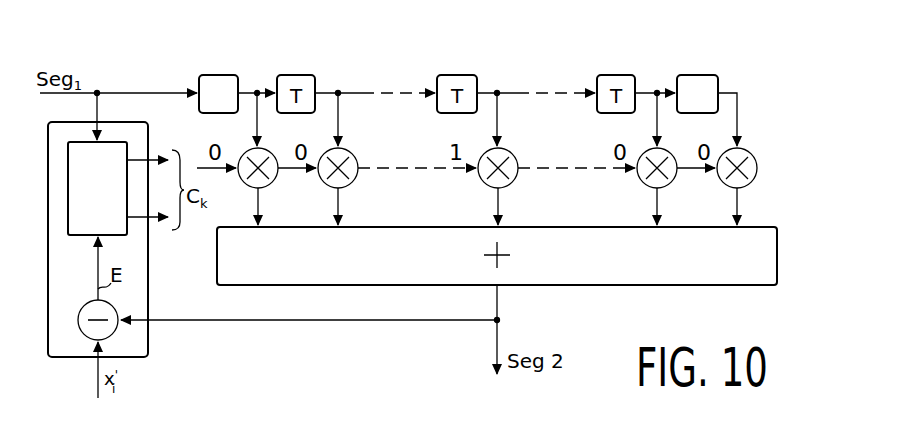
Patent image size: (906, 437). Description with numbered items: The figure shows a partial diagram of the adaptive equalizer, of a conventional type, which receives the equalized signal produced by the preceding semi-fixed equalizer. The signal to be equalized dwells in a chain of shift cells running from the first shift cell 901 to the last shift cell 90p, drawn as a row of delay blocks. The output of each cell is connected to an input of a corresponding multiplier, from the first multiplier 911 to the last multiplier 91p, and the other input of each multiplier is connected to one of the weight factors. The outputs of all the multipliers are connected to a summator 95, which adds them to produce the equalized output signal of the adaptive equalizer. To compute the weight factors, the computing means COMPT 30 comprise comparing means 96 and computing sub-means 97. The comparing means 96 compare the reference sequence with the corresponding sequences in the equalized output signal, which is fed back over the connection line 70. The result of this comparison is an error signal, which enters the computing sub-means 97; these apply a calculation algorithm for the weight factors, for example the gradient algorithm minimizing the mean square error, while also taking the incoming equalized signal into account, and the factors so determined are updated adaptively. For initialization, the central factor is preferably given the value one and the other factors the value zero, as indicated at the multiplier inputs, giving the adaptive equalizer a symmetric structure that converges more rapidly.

The computing means COMPT 30 is at (149, 331).
The connection line 70 is at (330, 322).
The summator 95 is at (447, 226).
The comparing means 96 is at (78, 318).
The computing sub-means 97 is at (85, 238).
The shift cell 901 is at (216, 74).
The shift cell 90p is at (705, 73).
The multiplier 911 is at (263, 150).
The multiplier 91p is at (726, 186).